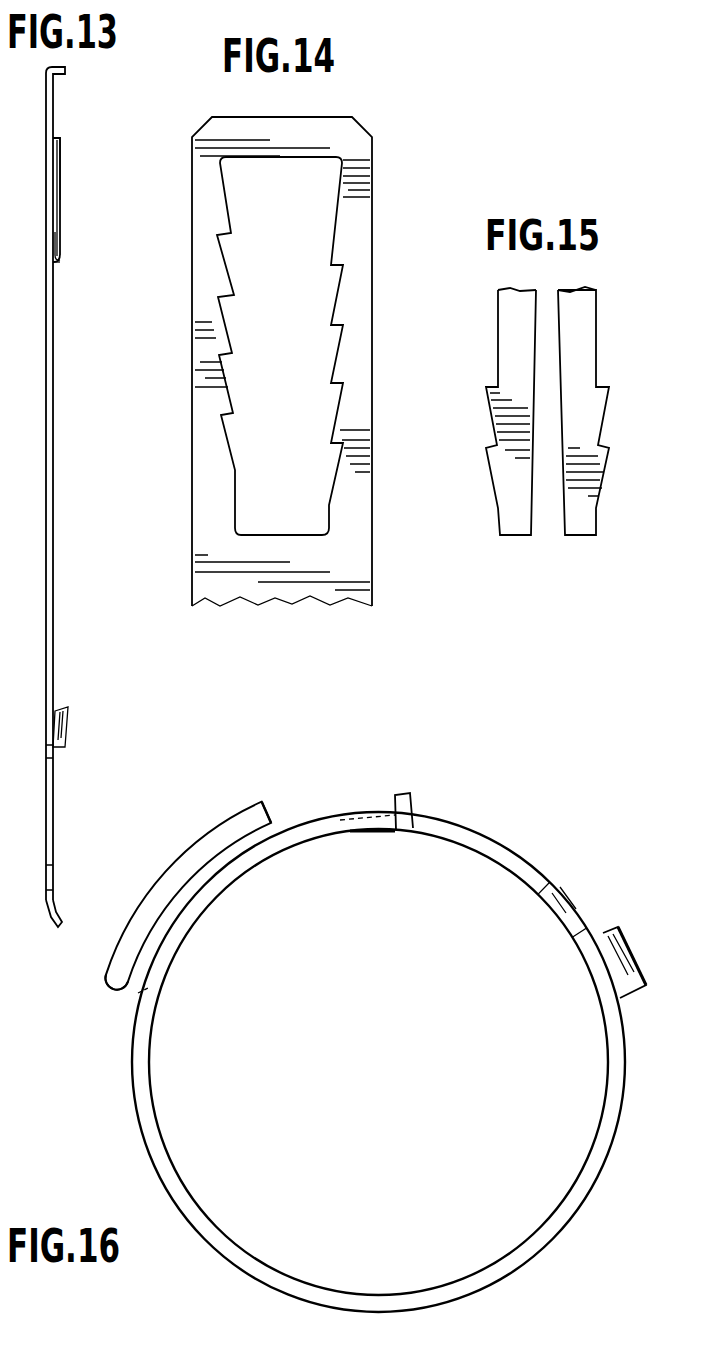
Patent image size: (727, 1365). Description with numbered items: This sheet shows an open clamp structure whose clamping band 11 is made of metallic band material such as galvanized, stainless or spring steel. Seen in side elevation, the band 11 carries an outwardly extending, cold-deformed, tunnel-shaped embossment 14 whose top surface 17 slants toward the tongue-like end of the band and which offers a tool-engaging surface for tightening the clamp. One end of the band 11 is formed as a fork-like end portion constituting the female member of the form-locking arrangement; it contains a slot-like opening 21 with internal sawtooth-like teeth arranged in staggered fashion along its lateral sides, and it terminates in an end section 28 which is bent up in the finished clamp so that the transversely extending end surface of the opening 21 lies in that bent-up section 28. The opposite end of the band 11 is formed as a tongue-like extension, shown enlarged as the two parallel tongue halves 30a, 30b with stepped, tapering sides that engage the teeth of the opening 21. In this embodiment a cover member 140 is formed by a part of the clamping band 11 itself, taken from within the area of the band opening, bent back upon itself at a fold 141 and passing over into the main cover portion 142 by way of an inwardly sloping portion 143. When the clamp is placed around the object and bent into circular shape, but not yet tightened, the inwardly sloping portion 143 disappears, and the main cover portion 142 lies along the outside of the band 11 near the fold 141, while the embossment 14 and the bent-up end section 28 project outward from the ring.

In FIG. 13, the clamping band 11 is at (53, 500).
In FIG. 16, the clamping band 11 is at (378, 1062).
In FIG. 13, the embossment 14 is at (63, 728).
In FIG. 16, the embossment 14 is at (630, 982).
In FIG. 16, the top surface 17 is at (612, 948).
In FIG. 14, the opening 21 is at (292, 258).
In FIG. 14, the end section 28 is at (305, 133).
In FIG. 16, the end section 28 is at (405, 800).
In FIG. 15, the first prong 30a is at (517, 335).
In FIG. 15, the second prong 30b is at (585, 338).
In FIG. 13, the cover member 140 is at (64, 189).
In FIG. 13, the bent-back location 141 is at (57, 263).
In FIG. 16, the bent-back location 141 is at (125, 1000).
In FIG. 13, the main cover portion 142 is at (60, 152).
In FIG. 16, the main cover portion 142 is at (207, 838).
In FIG. 13, the inwardly sloping portion 143 is at (60, 238).